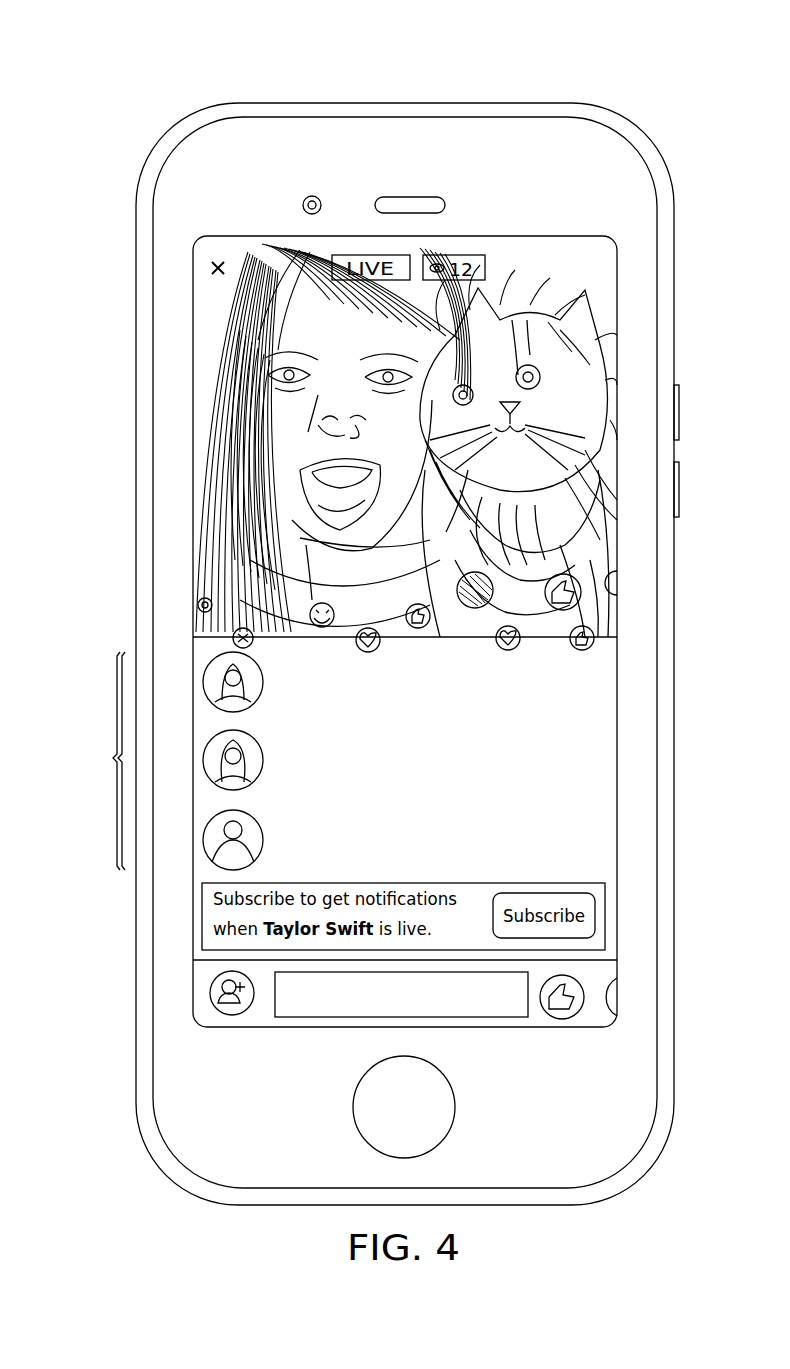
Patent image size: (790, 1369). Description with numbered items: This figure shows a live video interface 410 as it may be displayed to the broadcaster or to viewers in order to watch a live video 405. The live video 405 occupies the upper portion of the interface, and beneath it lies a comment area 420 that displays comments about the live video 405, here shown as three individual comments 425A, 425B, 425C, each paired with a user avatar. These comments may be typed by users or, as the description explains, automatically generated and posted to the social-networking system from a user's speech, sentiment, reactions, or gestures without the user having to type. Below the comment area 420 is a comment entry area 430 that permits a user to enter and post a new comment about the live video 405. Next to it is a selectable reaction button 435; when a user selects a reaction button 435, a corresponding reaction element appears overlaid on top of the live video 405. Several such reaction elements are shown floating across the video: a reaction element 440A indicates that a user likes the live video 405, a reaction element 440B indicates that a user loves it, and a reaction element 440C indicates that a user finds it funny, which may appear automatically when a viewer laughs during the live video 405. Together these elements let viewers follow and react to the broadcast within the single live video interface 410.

The live video interface 410 is at (262, 66).
The live video 405 is at (243, 243).
The comment area 420 is at (112, 757).
The comment 425A is at (455, 686).
The comment 425B is at (430, 764).
The comment 425C is at (392, 840).
The comment entry area 430 is at (322, 1020).
The reaction button 435 is at (563, 1022).
The reaction element 440A is at (563, 572).
The reaction element 440B is at (516, 650).
The reaction element 440C is at (237, 605).